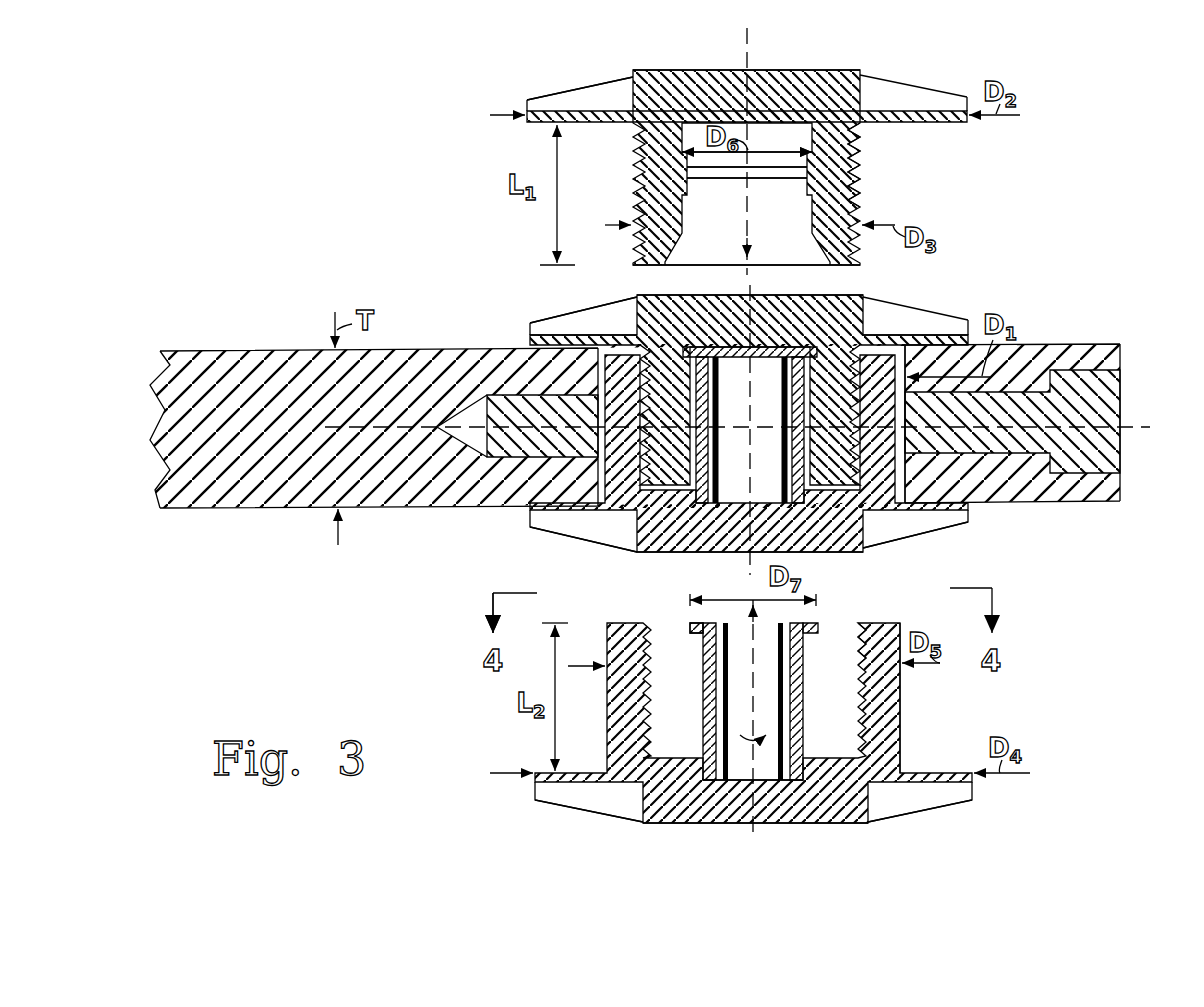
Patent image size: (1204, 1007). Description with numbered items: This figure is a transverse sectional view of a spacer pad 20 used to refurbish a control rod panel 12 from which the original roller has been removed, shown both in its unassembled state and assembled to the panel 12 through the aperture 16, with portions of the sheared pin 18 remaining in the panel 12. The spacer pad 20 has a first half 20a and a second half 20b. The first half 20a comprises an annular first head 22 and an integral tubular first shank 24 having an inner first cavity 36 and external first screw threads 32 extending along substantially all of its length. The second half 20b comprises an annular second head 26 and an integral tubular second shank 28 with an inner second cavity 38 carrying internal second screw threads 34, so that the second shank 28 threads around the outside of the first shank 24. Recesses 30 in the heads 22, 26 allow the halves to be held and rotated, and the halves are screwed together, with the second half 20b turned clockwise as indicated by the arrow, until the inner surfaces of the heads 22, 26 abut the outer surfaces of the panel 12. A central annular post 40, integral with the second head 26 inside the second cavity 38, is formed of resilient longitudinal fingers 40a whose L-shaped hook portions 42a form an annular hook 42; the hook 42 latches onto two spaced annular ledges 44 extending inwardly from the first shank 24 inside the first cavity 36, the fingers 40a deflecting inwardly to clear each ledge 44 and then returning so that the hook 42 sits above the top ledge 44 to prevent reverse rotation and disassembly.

The panel 12 is at (268, 508).
The aperture 16 is at (970, 490).
The pin 18 is at (490, 392).
The spacer pad 20 is at (945, 314).
The first half 20a is at (697, 69).
The second half 20b is at (866, 548).
The first head 22 is at (808, 70).
The first shank 24 is at (862, 142).
The second head 26 is at (660, 552).
The second shank 28 is at (901, 712).
The recesses 30 is at (585, 96).
The first screw threads 32 is at (862, 188).
The second screw threads 34 is at (858, 645).
The first cavity 36 is at (705, 226).
The second cavity 38 is at (847, 730).
The post 40 is at (702, 700).
The fingers 40a is at (745, 603).
The hook 42 is at (787, 345).
The hook portion 42a is at (690, 632).
The ledge 44 is at (808, 150).